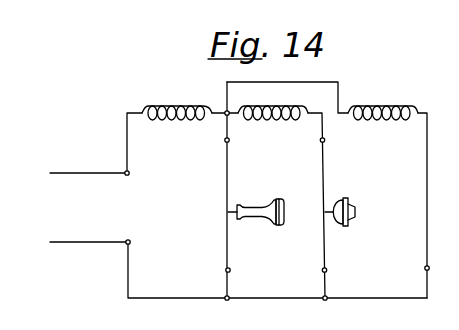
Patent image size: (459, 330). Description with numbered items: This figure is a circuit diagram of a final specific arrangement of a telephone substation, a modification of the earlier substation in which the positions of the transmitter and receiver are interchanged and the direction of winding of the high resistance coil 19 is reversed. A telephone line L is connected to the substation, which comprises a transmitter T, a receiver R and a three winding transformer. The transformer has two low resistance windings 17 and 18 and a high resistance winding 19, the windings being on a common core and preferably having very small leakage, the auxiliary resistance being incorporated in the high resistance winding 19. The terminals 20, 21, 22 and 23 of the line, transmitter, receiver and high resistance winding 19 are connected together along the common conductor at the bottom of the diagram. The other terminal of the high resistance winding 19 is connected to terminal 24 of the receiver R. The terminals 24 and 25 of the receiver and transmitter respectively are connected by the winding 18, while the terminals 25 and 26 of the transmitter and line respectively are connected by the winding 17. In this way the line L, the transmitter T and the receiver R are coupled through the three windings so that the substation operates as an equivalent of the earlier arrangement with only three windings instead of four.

The telephone line L is at (87, 207).
The low resistance winding 17 is at (177, 127).
The low resistance winding 18 is at (273, 127).
The high resistance winding 19 is at (383, 127).
The line terminal 20 is at (130, 244).
The transmitter terminal 21 is at (230, 272).
The receiver terminal 22 is at (322, 272).
The high resistance winding terminal 23 is at (425, 270).
The receiver terminal 24 is at (324, 142).
The transmitter terminal 25 is at (229, 142).
The line terminal 26 is at (129, 175).
The receiver R is at (284, 212).
The transmitter T is at (357, 214).